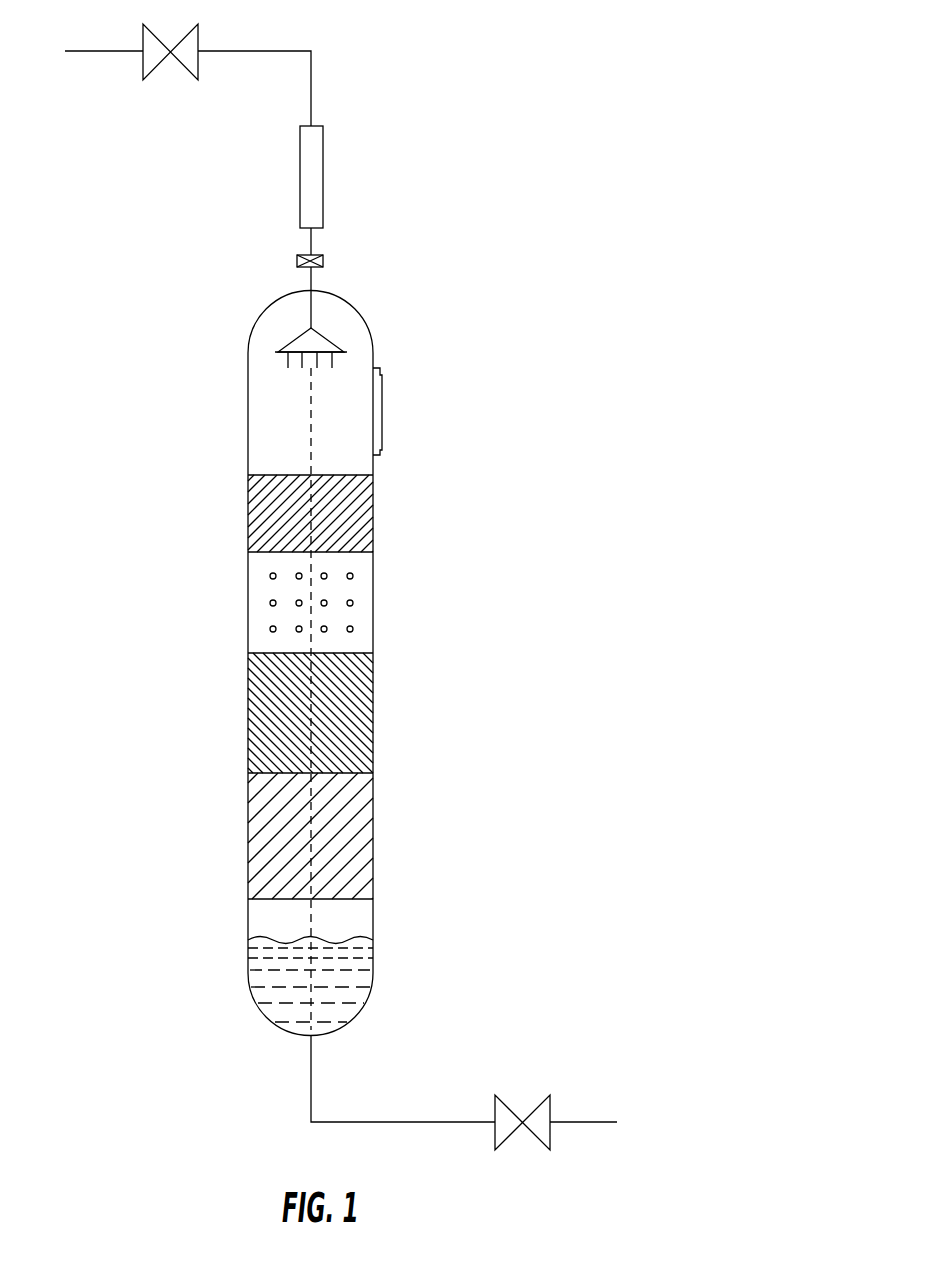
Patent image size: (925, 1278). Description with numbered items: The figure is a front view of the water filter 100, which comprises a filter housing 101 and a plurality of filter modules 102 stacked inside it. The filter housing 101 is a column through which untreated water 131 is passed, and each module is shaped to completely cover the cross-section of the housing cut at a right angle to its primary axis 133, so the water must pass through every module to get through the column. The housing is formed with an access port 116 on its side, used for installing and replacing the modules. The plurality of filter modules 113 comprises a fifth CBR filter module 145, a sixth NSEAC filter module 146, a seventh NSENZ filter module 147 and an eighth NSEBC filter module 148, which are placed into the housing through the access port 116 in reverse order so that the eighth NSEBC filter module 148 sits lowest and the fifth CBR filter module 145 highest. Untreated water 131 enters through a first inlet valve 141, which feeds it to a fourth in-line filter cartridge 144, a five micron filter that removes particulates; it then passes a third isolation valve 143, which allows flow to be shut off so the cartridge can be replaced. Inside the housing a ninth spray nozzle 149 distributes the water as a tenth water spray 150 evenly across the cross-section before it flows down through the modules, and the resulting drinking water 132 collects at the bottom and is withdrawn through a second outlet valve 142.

The water filter 100 is at (498, 128).
The filter housing 101 is at (373, 322).
The plurality of filter modules 102 is at (243, 797).
The plurality of filter modules 113 is at (358, 518).
The access port 116 is at (382, 407).
The untreated water 131 is at (342, 360).
The drinking water 132 is at (360, 978).
The primary axis 133 is at (310, 418).
The first inlet valve 141 is at (203, 35).
The second outlet valve 142 is at (528, 1100).
The third isolation valve 143 is at (323, 263).
The fourth in-line filter cartridge 144 is at (323, 177).
The fifth CBR filter module 145 is at (367, 492).
The sixth NSEAC filter module 146 is at (367, 615).
The seventh NSENZ filter module 147 is at (363, 702).
The eighth NSEBC filter module 148 is at (362, 833).
The ninth spray nozzle 149 is at (323, 332).
The tenth water spray 150 is at (288, 360).